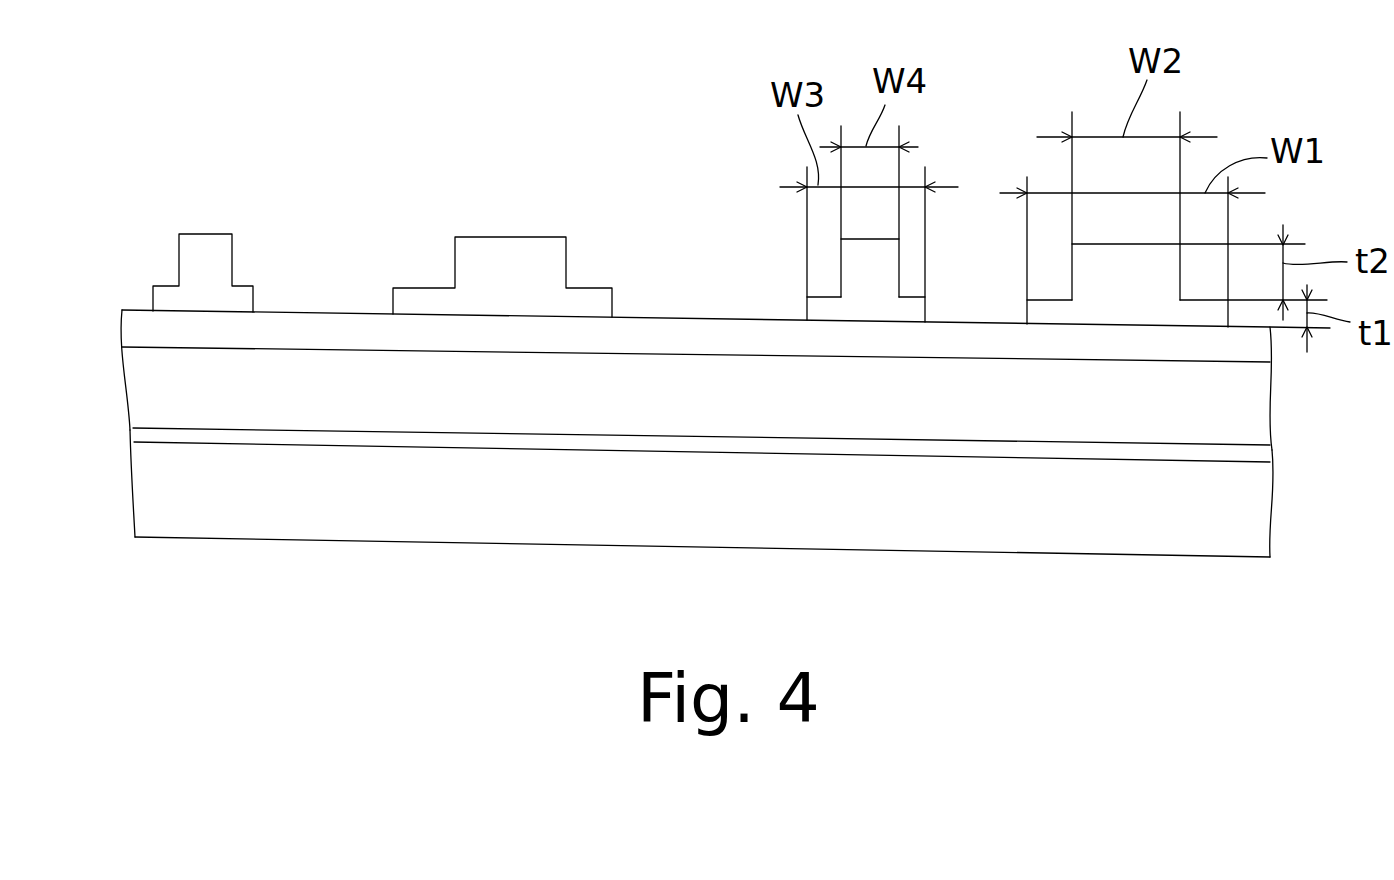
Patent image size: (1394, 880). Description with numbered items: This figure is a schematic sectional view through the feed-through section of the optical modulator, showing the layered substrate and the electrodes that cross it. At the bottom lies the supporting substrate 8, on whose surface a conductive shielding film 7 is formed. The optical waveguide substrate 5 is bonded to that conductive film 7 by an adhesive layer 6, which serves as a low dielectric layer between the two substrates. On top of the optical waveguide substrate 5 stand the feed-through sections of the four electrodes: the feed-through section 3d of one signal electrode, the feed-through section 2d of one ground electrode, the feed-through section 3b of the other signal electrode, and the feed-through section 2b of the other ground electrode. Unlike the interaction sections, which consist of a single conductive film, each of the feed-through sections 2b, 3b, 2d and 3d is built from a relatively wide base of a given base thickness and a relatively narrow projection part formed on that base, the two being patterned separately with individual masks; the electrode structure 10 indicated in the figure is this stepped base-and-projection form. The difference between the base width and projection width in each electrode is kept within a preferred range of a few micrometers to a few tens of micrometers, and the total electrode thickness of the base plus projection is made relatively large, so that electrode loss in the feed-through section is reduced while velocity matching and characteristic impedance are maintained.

The optical waveguide substrate 5 is at (146, 328).
The adhesive layer 6 is at (146, 388).
The conductive film 7 is at (152, 430).
The supporting substrate 8 is at (152, 500).
The feed-through section of signal electrode 3B 3d is at (216, 322).
The feed-through section of ground electrode 2B 2d is at (522, 324).
The feed-through section of signal electrode 3A 3b is at (910, 280).
The feed-through section of ground electrode 2A 2b is at (1177, 274).
The electrode structure 10 is at (798, 293).